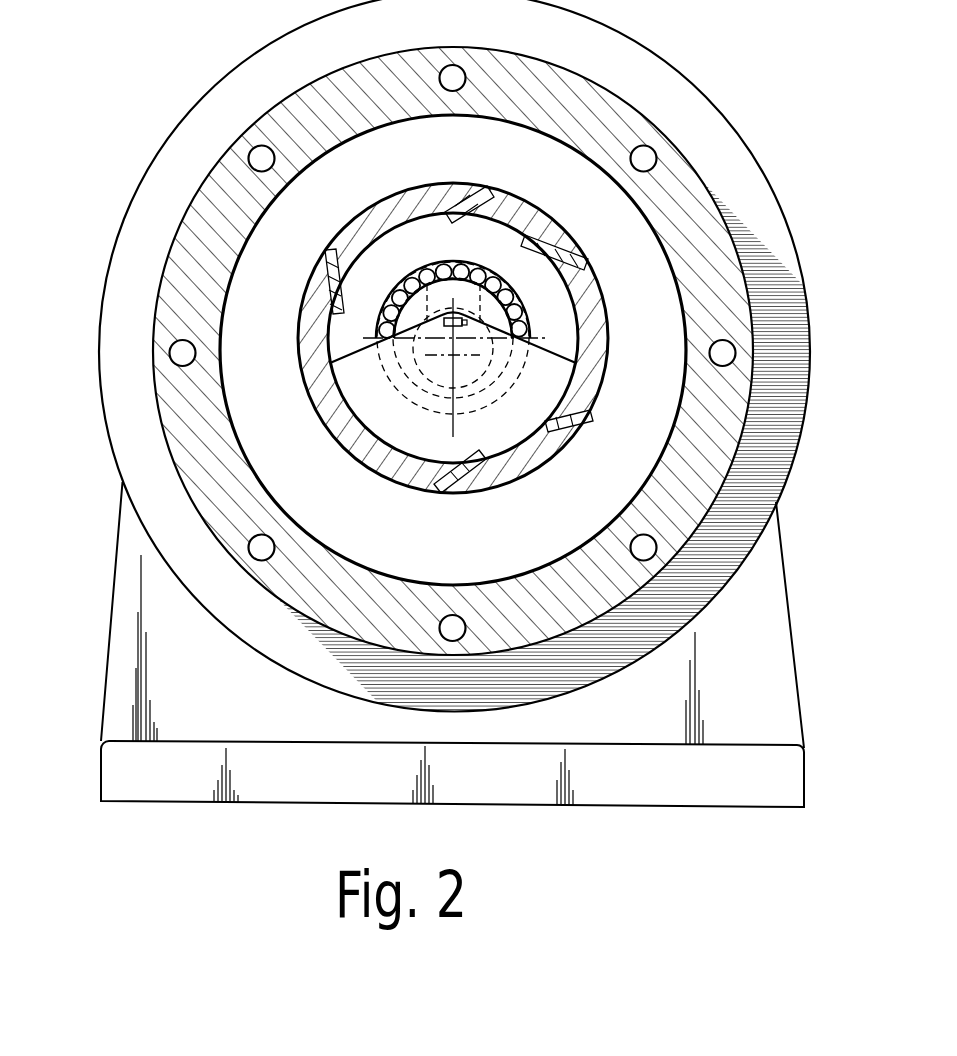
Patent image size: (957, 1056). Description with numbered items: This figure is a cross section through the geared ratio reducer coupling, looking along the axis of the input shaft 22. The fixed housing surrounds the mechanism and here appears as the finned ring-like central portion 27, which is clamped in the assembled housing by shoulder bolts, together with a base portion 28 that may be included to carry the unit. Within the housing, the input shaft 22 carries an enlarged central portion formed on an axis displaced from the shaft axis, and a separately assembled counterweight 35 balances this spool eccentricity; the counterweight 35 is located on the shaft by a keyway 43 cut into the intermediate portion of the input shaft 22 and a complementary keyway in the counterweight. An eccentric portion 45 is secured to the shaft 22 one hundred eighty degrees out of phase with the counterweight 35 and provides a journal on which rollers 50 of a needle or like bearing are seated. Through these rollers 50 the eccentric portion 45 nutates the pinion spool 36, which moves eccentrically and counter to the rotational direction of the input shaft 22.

The input shaft 22 is at (420, 282).
The finned ring-like central portion 27 is at (153, 173).
The base portion 28 is at (115, 773).
The counterweight 35 is at (424, 450).
The pinion spool 36 is at (541, 302).
The keyway 43 is at (523, 317).
The eccentric portion 45 is at (416, 313).
The rollers 50 is at (481, 273).